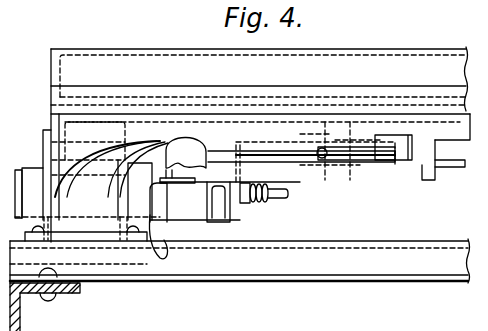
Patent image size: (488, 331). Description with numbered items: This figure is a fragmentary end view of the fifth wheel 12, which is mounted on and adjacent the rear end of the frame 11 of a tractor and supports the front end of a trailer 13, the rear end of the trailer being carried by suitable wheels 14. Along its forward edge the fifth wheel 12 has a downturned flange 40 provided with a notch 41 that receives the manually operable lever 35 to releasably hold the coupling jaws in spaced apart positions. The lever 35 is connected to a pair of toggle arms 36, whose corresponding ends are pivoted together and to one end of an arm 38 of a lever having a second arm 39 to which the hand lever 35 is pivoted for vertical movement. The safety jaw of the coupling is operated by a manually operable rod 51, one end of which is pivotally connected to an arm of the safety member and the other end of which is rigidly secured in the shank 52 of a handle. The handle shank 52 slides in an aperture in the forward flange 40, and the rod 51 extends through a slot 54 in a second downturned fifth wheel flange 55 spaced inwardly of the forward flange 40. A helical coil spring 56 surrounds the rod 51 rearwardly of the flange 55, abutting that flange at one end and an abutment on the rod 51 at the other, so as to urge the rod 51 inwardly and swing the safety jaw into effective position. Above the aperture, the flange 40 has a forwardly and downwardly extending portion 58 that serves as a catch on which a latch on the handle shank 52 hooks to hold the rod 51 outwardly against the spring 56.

The frame 11 is at (240, 274).
The fifth wheel 12 is at (458, 128).
The trailer 13 is at (154, 47).
The wheels 14 is at (33, 175).
The manually operable lever 35 is at (208, 153).
The toggle arms 36 is at (456, 168).
The arm 38 is at (398, 162).
The second arm 39 is at (318, 166).
The downturned flange 40 is at (422, 179).
The notch 41 is at (398, 138).
The manually operable rod 51 is at (283, 196).
The handle shank 52 is at (161, 252).
The slot 54 is at (220, 218).
The downturned fifth wheel flange 55 is at (255, 215).
The helical coil spring 56 is at (250, 201).
The forwardly and downwardly extending portion 58 is at (165, 163).